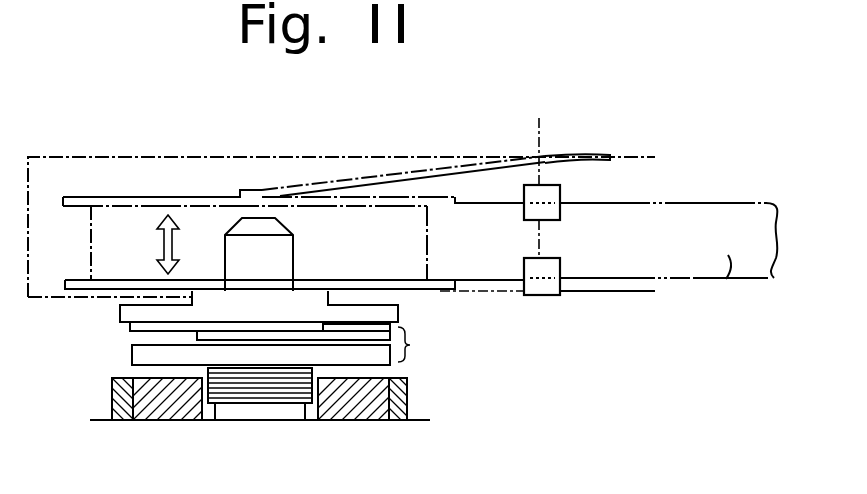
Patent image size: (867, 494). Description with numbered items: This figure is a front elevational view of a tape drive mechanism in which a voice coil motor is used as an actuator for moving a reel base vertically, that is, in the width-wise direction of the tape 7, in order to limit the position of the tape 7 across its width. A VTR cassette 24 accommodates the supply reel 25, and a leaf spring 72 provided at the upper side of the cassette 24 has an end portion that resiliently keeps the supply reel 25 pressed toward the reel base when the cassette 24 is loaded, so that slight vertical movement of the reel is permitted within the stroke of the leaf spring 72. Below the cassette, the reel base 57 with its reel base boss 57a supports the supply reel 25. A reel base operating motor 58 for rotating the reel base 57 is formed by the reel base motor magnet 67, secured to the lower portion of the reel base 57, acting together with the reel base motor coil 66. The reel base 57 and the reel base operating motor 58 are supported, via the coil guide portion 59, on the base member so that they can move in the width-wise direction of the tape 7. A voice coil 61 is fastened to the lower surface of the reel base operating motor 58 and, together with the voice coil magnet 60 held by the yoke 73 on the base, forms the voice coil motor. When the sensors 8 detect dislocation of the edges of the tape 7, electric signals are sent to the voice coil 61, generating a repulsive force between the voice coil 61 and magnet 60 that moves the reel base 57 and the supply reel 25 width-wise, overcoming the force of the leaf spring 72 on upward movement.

The VTR cassette 24 is at (62, 158).
The supply reel 25 is at (134, 197).
The leaf spring 72 is at (445, 175).
The sensor 8 is at (560, 193).
The tape 7 is at (727, 285).
The reel base boss 57a is at (293, 250).
The reel base 57 is at (120, 310).
The reel base motor magnet 67 is at (130, 330).
The reel base motor coil 66 is at (132, 360).
The reel base operating motor 58 is at (424, 344).
The yoke 73 is at (112, 405).
The voice coil magnet 60 is at (155, 422).
The voice coil 61 is at (228, 403).
The coil guide portion 59 is at (265, 420).